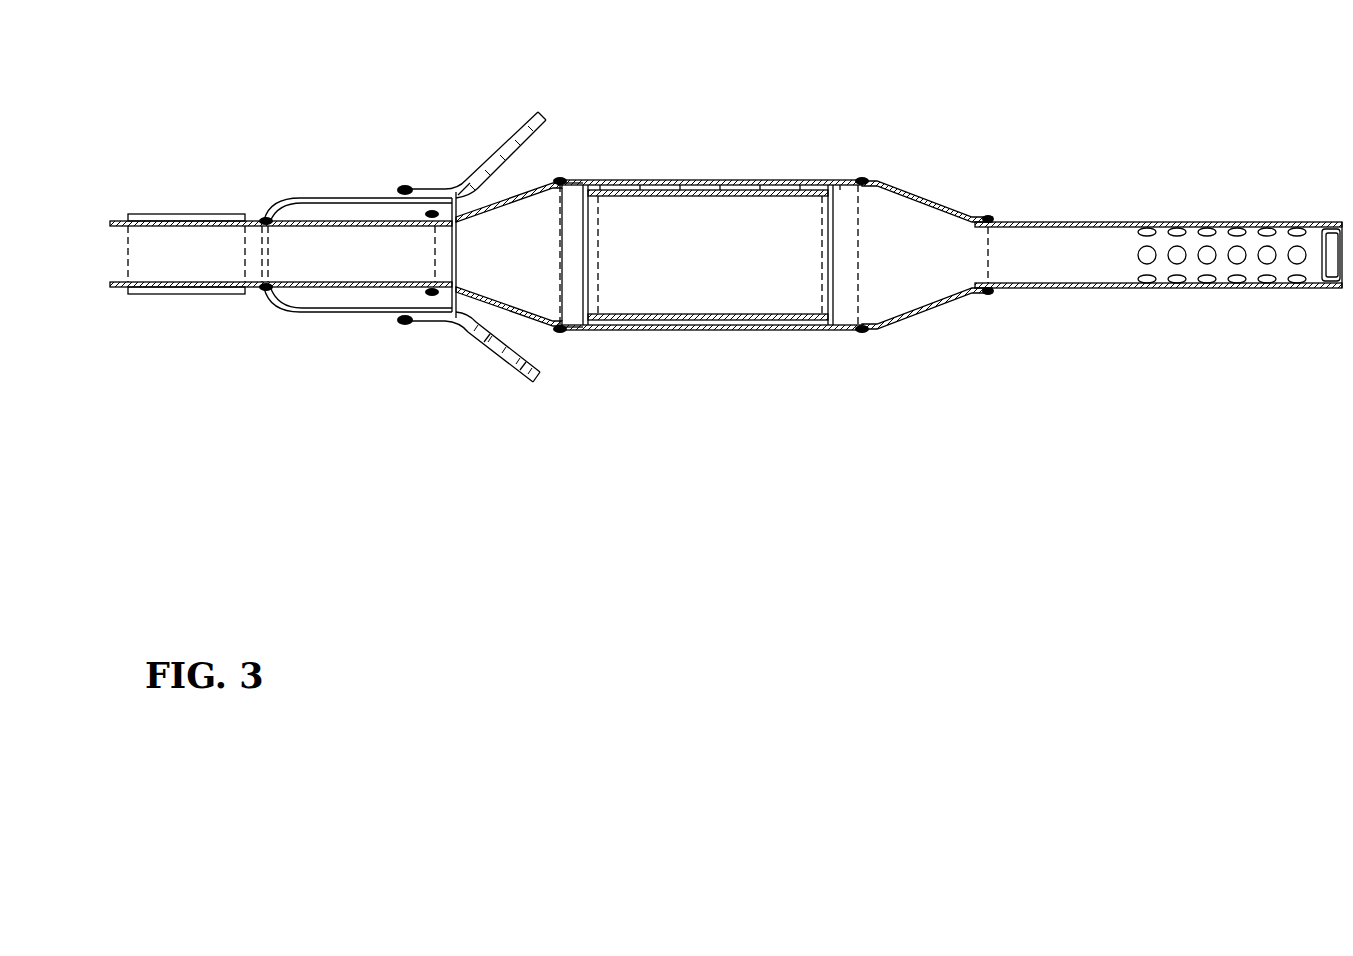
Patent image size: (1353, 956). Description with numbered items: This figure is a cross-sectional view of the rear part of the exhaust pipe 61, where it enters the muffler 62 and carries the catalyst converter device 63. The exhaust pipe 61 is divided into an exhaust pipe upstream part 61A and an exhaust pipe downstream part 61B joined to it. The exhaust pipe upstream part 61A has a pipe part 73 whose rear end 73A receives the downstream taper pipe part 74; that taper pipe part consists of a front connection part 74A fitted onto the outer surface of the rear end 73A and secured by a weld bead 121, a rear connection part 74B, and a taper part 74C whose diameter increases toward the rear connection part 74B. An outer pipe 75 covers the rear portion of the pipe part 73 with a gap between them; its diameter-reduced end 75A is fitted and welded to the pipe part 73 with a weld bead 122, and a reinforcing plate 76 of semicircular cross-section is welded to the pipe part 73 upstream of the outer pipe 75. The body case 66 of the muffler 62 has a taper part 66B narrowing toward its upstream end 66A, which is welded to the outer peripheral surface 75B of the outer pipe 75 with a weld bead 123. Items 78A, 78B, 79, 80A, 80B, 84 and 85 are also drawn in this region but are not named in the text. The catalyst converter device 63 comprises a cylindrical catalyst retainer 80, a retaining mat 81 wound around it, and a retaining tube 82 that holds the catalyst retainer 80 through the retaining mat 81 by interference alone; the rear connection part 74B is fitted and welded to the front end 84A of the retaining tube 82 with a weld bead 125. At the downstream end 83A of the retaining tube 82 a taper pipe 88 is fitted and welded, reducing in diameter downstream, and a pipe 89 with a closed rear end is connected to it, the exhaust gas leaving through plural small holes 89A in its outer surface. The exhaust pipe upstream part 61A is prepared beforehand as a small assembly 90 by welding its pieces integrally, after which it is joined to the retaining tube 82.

The exhaust pipe 61 is at (108, 322).
The exhaust pipe upstream part 61A is at (135, 192).
The exhaust pipe downstream part 61B is at (670, 172).
The muffler 62 is at (468, 360).
The catalyst converter device 63 is at (636, 176).
The body case 66 is at (455, 316).
The upstream end 66A is at (430, 322).
The taper part 66B is at (515, 372).
The pipe part 73 is at (120, 215).
The rear end 73A is at (432, 272).
The downstream taper pipe part 74 is at (498, 186).
The front connection part 74A is at (440, 186).
The rear connection part 74B is at (573, 185).
The taper part 74C is at (515, 188).
The outer pipe 75 is at (332, 196).
The end 75A is at (272, 205).
The outer peripheral surface 75B is at (350, 312).
The reinforcing plate 76 is at (152, 208).
The upper cone portion 78A is at (470, 210).
The lower cone portion 78B is at (492, 300).
The inlet end plate 79 is at (556, 318).
The catalyst retainer 80 is at (818, 180).
The upstream end of catalyst case 80A is at (590, 232).
The downstream end of catalyst case 80B is at (826, 235).
The retaining mat 81 is at (748, 188).
The retaining tube 82 is at (710, 176).
The downstream end 83A is at (860, 180).
The lower weld 84 is at (560, 332).
The front end 84A is at (575, 330).
The inlet chamber 85 is at (572, 218).
The taper pipe 88 is at (938, 205).
The pipe 89 is at (1105, 222).
The small holes 89A is at (1207, 250).
The small assembly 90 is at (222, 302).
The weld bead 121 is at (410, 186).
The weld bead 122 is at (262, 210).
The weld bead 123 is at (405, 322).
The weld bead 125 is at (556, 180).